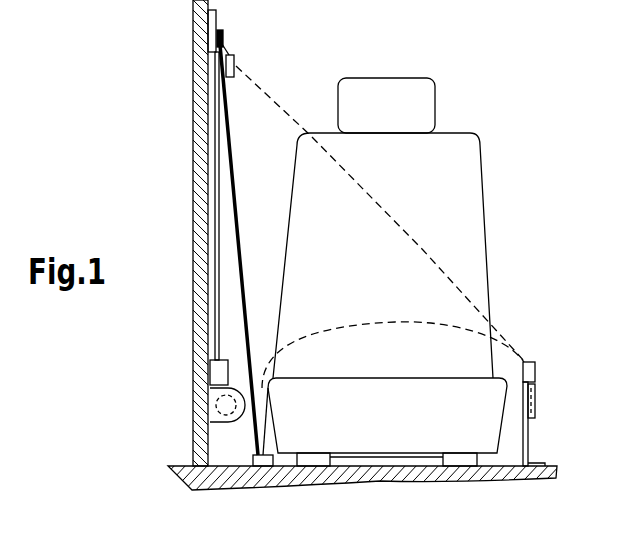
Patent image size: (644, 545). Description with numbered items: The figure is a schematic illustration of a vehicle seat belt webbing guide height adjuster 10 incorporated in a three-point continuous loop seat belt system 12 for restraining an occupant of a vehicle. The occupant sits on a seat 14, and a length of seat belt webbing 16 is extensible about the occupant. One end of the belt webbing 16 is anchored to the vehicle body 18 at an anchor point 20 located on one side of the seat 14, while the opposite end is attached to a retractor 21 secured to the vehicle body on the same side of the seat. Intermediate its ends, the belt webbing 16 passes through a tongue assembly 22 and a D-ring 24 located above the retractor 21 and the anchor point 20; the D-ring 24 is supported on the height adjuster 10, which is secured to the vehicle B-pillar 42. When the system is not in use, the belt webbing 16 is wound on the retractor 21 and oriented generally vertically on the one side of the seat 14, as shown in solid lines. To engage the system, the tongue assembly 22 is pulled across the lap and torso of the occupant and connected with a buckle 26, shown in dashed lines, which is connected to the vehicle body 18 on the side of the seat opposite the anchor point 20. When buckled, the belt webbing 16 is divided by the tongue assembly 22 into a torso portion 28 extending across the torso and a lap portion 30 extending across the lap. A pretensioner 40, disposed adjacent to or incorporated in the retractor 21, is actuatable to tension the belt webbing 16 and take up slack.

The seat belt webbing guide height adjuster 10 is at (228, 13).
The seat belt system 12 is at (477, 92).
The seat 14 is at (480, 138).
The seat belt webbing 16 is at (247, 236).
The vehicle body 18 is at (193, 484).
The anchor point 20 is at (270, 450).
The retractor 21 is at (225, 407).
The tongue assembly 22 is at (236, 60).
The D-ring 24 is at (222, 36).
The buckle 26 is at (532, 418).
The torso portion 28 is at (427, 257).
The lap portion 30 is at (403, 322).
The pretensioner 40 is at (224, 364).
The vehicle B-pillar 42 is at (203, 191).